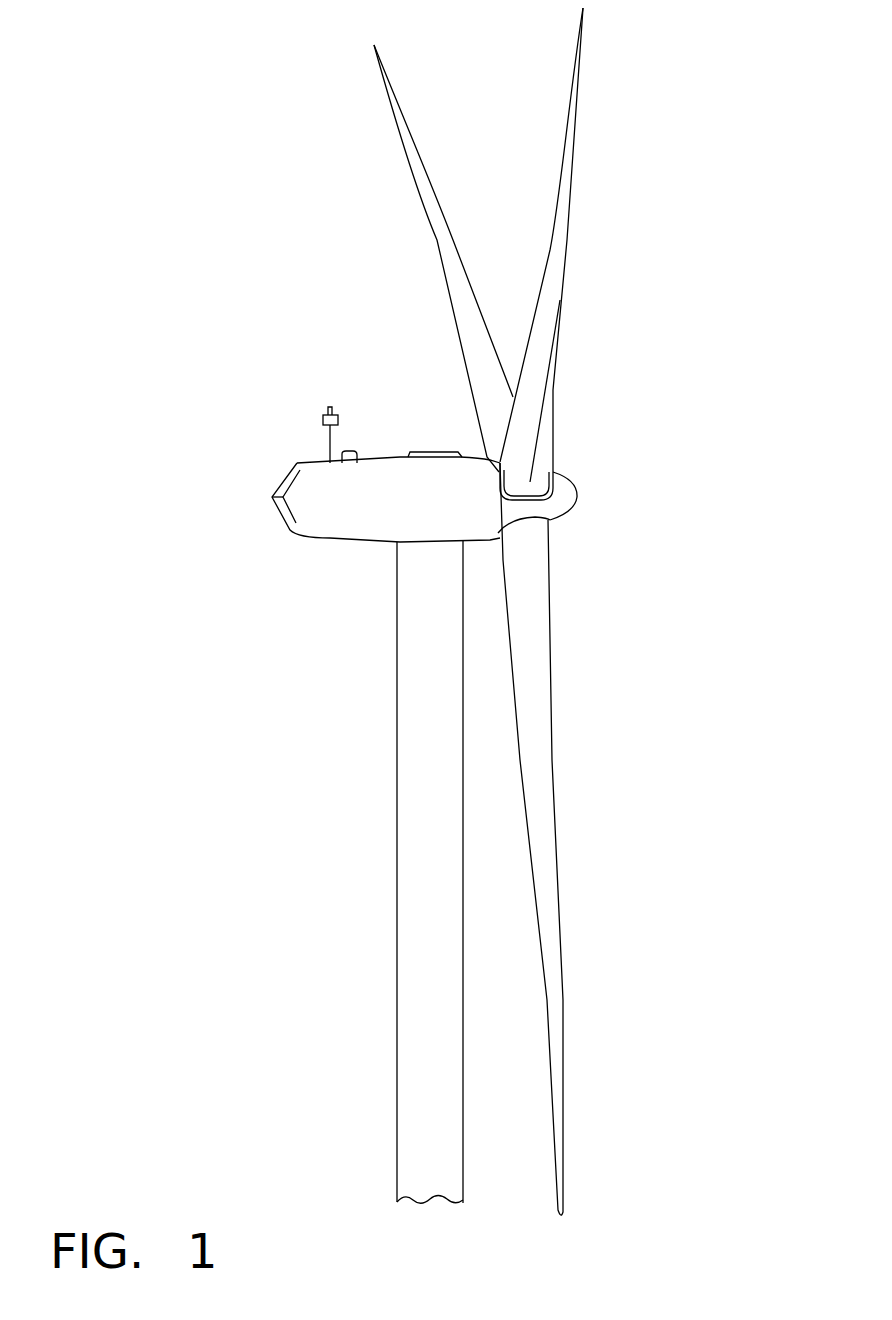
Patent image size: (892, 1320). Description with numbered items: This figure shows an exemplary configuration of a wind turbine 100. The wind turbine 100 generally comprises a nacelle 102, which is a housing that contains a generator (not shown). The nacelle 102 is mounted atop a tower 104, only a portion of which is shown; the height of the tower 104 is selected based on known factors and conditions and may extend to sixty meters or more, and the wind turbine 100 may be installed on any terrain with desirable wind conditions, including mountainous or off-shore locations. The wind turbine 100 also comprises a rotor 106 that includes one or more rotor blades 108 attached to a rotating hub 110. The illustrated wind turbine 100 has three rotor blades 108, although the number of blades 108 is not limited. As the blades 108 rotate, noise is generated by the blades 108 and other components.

The wind turbine 100 is at (232, 234).
The nacelle 102 is at (330, 540).
The tower 104 is at (396, 876).
The rotor 106 is at (676, 212).
The rotor blades 108 is at (383, 96).
The rotating hub 110 is at (577, 498).